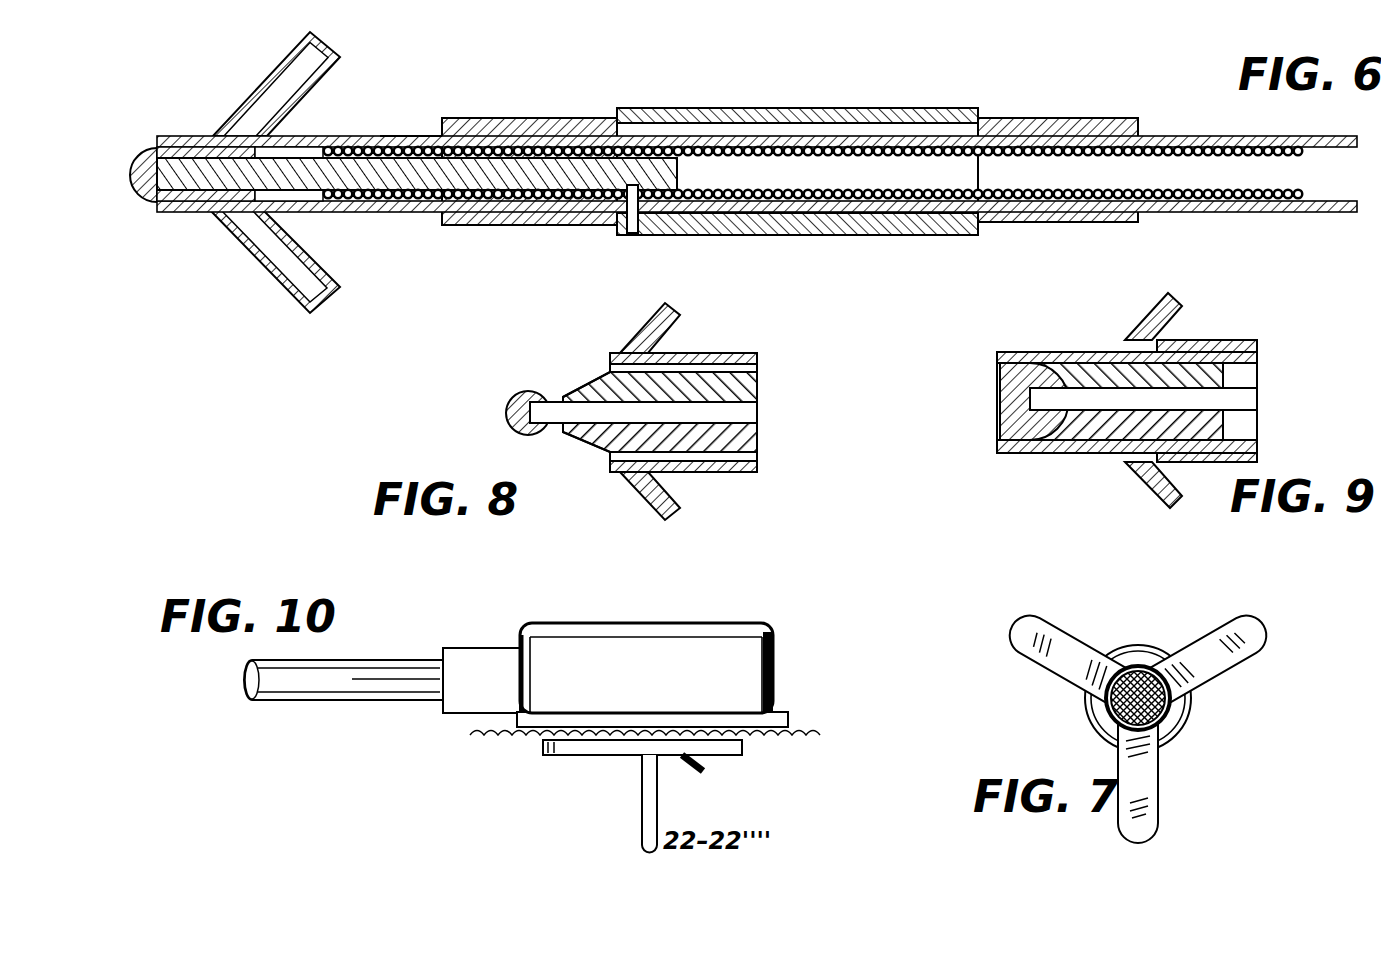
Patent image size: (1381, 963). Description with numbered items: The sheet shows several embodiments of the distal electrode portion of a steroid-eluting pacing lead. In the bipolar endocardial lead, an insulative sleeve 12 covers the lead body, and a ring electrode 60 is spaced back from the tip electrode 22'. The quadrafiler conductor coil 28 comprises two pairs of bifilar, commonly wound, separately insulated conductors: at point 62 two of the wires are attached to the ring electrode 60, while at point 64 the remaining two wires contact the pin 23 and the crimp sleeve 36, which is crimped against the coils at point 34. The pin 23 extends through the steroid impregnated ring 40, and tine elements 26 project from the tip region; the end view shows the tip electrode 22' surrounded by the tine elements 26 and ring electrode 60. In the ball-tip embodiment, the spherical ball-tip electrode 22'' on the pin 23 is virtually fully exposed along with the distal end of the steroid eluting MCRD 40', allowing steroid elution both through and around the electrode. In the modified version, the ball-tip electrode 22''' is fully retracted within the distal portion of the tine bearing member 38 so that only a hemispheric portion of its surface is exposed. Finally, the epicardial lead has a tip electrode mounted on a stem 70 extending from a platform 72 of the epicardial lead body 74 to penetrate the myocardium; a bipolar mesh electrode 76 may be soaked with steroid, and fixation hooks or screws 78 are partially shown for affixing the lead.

In FIG. 6, the insulative sleeve 12 is at (1186, 134).
In FIG. 9, the insulative sleeve 12 is at (1238, 340).
In FIG. 10, the insulative sleeve 12 is at (320, 701).
In FIG. 6, the tip electrode 22' is at (182, 225).
In FIG. 7, the tip electrode 22' is at (1154, 661).
In FIG. 8, the ball-tip electrode 22'' is at (490, 409).
In FIG. 9, the ball-tip electrode 22''' is at (1006, 432).
In FIG. 6, the pin 23 is at (514, 158).
In FIG. 8, the pin 23 is at (547, 402).
In FIG. 9, the pin 23 is at (1245, 409).
In FIG. 6, the tine elements 26 is at (310, 292).
In FIG. 8, the tine elements 26 is at (675, 308).
In FIG. 9, the tine elements 26 is at (1190, 296).
In FIG. 7, the tine elements 26 is at (1222, 668).
In FIG. 6, the quadrafiler conductor coil 28 is at (1040, 124).
In FIG. 6, the crimp point 34 is at (400, 128).
In FIG. 6, the crimp sleeve 36 is at (480, 130).
In FIG. 9, the tine bearing member 38 is at (1048, 352).
In FIG. 6, the steroid impregnated ring 40 is at (240, 249).
In FIG. 8, the steroid eluting MCRD 40' is at (653, 433).
In FIG. 9, the steroid eluting MCRD 40' is at (1128, 439).
In FIG. 6, the ring electrode 60 is at (872, 108).
In FIG. 7, the ring electrode 60 is at (1175, 742).
In FIG. 6, the attachment point 62 is at (632, 236).
In FIG. 6, the contact point 64 is at (455, 226).
In FIG. 10, the stem 70 is at (640, 805).
In FIG. 10, the platform 72 is at (773, 693).
In FIG. 10, the epicardial lead body 74 is at (728, 618).
In FIG. 10, the bipolar mesh electrode 76 is at (475, 735).
In FIG. 10, the fixation hooks or screws 78 is at (707, 771).